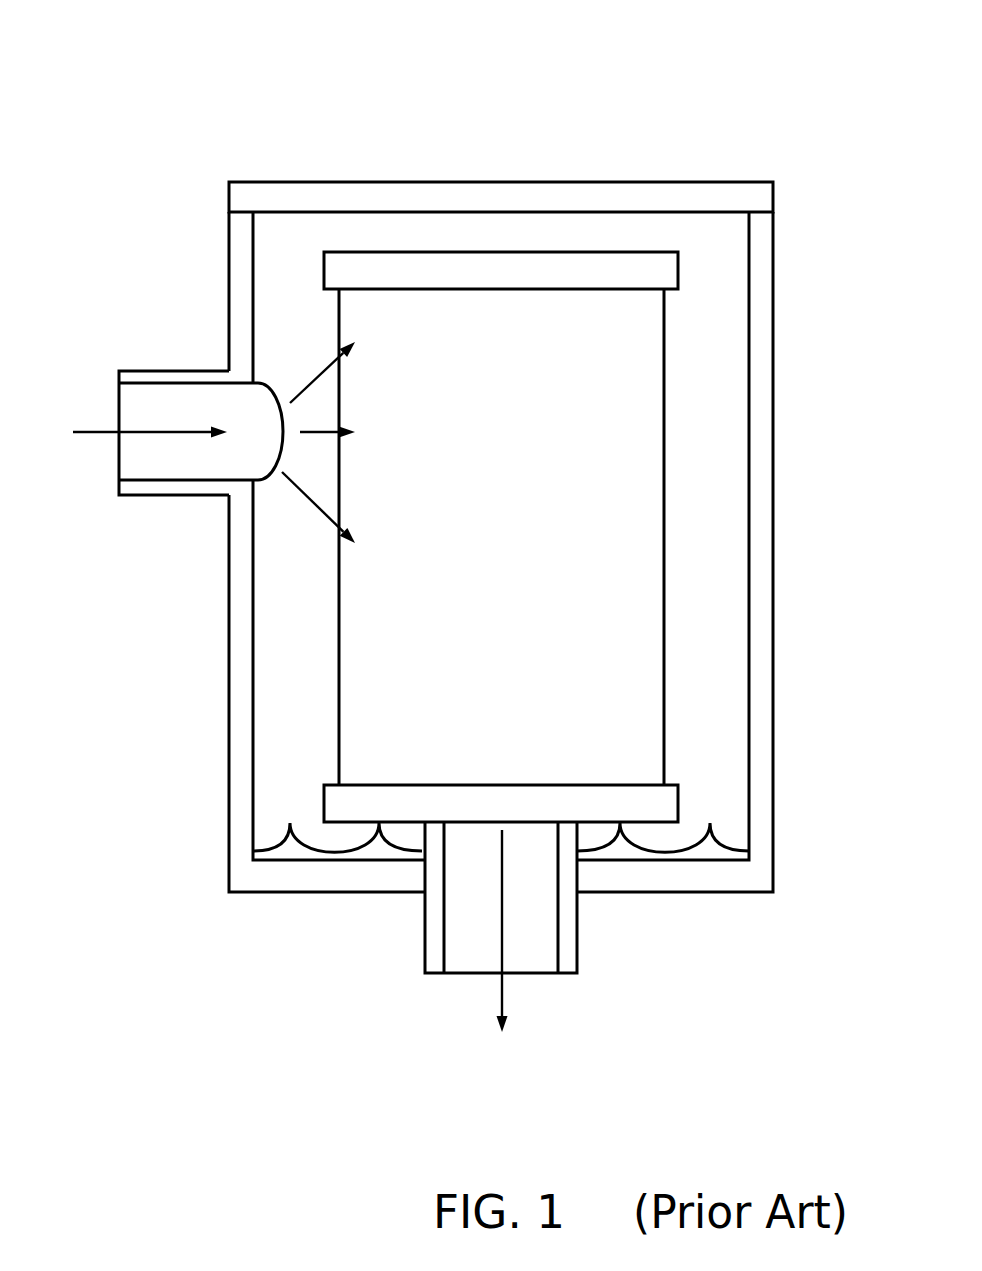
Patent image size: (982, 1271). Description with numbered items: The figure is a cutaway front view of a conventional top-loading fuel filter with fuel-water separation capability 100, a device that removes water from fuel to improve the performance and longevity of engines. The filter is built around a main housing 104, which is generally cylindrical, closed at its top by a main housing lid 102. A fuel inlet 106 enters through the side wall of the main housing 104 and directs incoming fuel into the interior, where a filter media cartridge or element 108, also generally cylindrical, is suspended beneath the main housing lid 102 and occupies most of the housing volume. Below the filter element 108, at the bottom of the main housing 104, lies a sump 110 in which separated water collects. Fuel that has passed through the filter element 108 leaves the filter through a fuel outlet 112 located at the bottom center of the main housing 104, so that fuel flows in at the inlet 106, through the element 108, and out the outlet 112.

The fuel filter 100 is at (206, 95).
The main housing lid 102 is at (229, 200).
The main housing 104 is at (228, 257).
The fuel inlet 106 is at (130, 392).
The filter media cartridge or element 108 is at (522, 548).
The sump 110 is at (280, 853).
The fuel outlet 112 is at (467, 952).